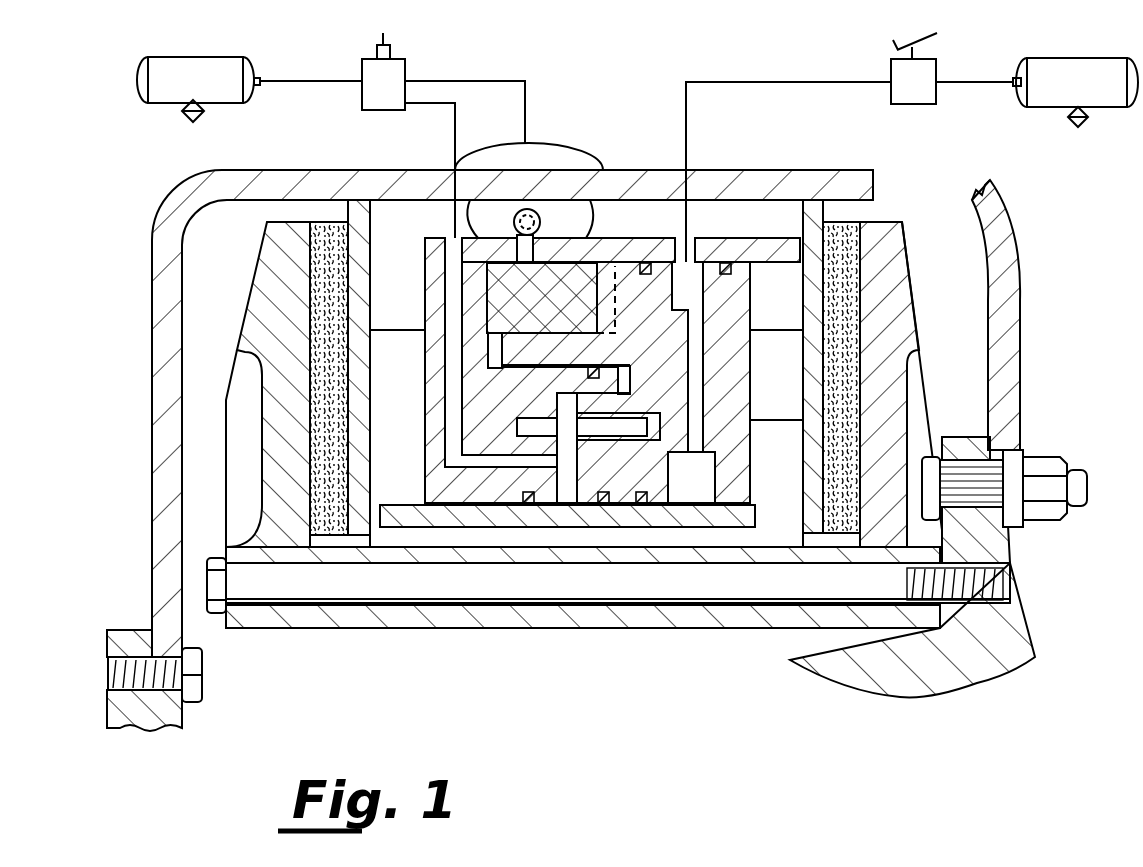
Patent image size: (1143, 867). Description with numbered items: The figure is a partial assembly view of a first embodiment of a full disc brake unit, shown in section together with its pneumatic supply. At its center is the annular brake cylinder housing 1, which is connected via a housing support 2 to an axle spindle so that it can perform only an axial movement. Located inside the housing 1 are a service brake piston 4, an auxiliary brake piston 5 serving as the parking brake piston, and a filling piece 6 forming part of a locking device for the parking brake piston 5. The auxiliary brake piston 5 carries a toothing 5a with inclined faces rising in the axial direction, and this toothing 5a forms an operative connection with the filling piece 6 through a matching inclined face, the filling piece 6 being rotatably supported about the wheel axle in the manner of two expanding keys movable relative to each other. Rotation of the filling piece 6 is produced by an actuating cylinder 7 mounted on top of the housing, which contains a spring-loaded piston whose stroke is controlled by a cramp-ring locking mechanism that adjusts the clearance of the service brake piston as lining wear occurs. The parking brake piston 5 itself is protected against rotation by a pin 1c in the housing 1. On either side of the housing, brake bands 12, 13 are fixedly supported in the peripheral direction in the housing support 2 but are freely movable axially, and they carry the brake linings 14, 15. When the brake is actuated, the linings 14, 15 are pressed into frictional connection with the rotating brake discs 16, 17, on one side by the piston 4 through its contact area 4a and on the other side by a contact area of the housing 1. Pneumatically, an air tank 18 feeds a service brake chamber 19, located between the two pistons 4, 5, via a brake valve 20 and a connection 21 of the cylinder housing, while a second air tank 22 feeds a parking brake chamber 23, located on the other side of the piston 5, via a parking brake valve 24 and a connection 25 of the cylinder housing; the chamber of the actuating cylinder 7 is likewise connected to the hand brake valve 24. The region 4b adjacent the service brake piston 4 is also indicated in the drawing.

The brake cylinder housing 1 is at (637, 248).
The pin 1c is at (630, 422).
The housing support 2 is at (790, 185).
The service brake piston 4 is at (740, 448).
The contact area 4a is at (808, 383).
The cylinder chamber 4b is at (366, 383).
The auxiliary brake piston 5 is at (645, 478).
The toothing 5a is at (558, 315).
The filling piece 6 is at (563, 275).
The actuating cylinder 7 is at (540, 156).
The brake band 12 is at (363, 276).
The brake band 13 is at (808, 469).
The brake lining 14 is at (328, 238).
The brake lining 15 is at (845, 238).
The brake disc 16 is at (272, 287).
The brake disc 17 is at (897, 284).
The air tank 18 is at (1088, 77).
The service brake chamber 19 is at (705, 495).
The brake valve 20 is at (930, 68).
The connection 21 is at (690, 240).
The second air tank 22 is at (205, 75).
The parking brake chamber 23 is at (560, 470).
The parking brake valve 24 is at (390, 70).
The connection 25 is at (452, 240).